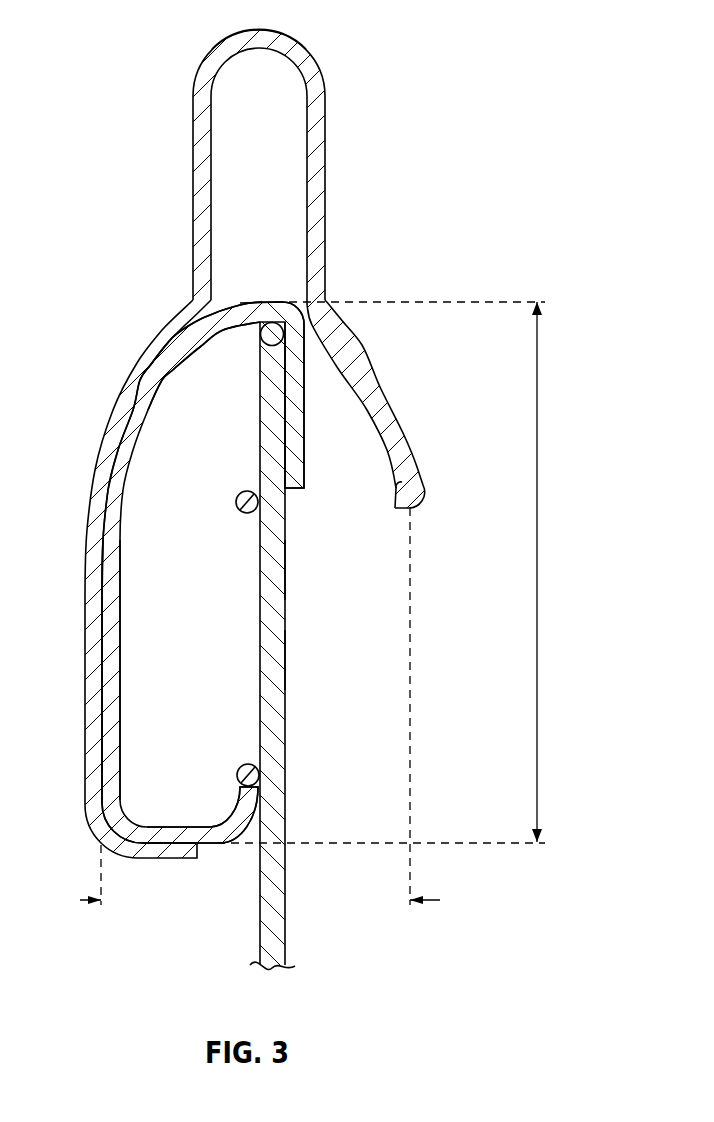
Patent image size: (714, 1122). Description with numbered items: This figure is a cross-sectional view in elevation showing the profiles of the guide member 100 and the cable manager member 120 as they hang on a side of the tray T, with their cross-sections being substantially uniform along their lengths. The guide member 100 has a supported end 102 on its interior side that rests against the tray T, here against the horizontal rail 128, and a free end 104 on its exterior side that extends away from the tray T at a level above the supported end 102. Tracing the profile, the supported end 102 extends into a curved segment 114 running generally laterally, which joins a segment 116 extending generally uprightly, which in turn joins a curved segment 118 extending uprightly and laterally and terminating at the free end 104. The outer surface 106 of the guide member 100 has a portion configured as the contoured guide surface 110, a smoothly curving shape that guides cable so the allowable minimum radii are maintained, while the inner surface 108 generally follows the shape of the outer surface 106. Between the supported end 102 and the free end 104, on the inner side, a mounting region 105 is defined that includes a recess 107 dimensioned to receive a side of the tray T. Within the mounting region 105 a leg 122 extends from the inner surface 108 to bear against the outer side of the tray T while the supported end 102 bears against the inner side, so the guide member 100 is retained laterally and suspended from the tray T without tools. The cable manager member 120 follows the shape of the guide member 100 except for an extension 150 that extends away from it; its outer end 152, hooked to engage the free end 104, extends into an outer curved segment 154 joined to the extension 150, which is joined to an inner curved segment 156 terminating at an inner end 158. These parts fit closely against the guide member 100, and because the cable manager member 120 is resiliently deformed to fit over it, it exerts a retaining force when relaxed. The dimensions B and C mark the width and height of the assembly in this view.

The guide member 100 is at (280, 293).
The supported end 102 is at (222, 808).
The free end 104 is at (393, 477).
The mounting region 105 is at (308, 661).
The outer surface 106 is at (249, 290).
The recess 107 is at (308, 566).
The inner surface 108 is at (123, 510).
The contoured guide surface 110 is at (183, 337).
The curved segment 114 is at (163, 823).
The segment 116 is at (120, 582).
The curved segment 118 is at (162, 390).
The cable manager member 120 is at (288, 36).
The leg 122 is at (303, 427).
The horizontal rail 128 is at (247, 763).
The extension 150 is at (327, 110).
The outer end 152 is at (423, 497).
The outer curved segment 154 is at (393, 395).
The inner curved segment 156 is at (122, 393).
The inner end 158 is at (167, 860).
The tray T is at (287, 765).
The width dimension B is at (80, 900).
The height dimension C is at (538, 580).